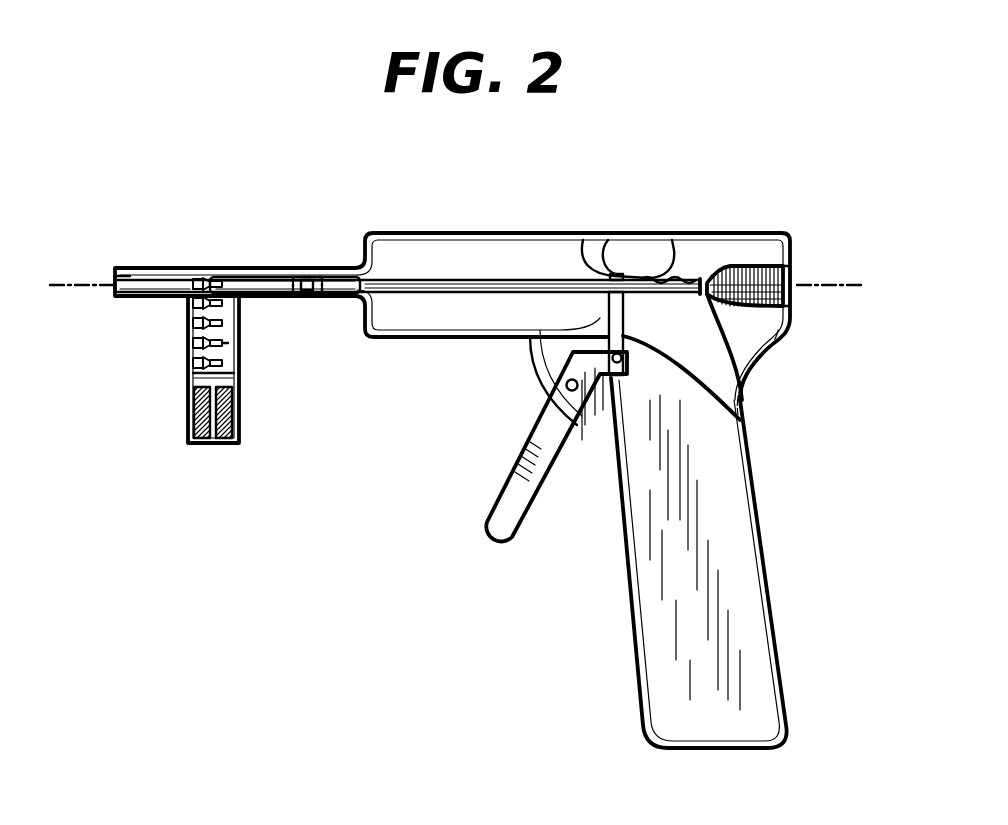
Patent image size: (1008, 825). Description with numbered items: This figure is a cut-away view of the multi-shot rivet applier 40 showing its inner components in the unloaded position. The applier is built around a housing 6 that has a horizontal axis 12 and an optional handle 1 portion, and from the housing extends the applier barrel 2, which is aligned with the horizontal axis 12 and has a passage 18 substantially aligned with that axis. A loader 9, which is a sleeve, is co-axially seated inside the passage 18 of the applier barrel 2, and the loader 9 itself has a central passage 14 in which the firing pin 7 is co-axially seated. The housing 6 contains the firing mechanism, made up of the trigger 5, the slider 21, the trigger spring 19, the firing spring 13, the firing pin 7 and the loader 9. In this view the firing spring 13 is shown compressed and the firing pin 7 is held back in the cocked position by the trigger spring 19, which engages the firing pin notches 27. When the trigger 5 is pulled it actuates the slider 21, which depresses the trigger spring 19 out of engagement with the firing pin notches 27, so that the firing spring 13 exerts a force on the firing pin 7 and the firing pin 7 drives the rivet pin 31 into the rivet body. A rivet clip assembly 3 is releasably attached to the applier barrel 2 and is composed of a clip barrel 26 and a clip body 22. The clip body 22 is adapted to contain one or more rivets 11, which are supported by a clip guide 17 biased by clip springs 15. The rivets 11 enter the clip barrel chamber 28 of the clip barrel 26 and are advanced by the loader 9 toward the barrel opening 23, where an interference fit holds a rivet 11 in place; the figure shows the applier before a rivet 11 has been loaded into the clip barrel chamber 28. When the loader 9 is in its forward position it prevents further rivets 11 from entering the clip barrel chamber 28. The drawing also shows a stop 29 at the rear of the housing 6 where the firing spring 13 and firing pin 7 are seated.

The handle 1 is at (778, 607).
The applier barrel 2 is at (280, 270).
The rivet clip assembly 3 is at (186, 440).
The trigger 5 is at (500, 522).
The housing 6 is at (718, 238).
The firing pin 7 is at (445, 292).
The loader 9 is at (247, 282).
The rivet 11 is at (193, 363).
The horizontal axis 12 is at (67, 288).
The firing spring 13 is at (768, 268).
The central passage 14 is at (314, 282).
The clip springs 15 is at (220, 443).
The clip guide 17 is at (228, 380).
The passage 18 is at (289, 296).
The trigger spring 19 is at (588, 240).
The slider 21 is at (742, 418).
The clip body 22 is at (239, 362).
The barrel opening 23 is at (118, 283).
The clip barrel 26 is at (150, 268).
The firing pin notches 27 is at (662, 278).
The clip barrel chamber 28 is at (160, 287).
The stop 29 is at (742, 348).
The rivet pin 31 is at (228, 343).
The rivet applier 40 is at (635, 680).